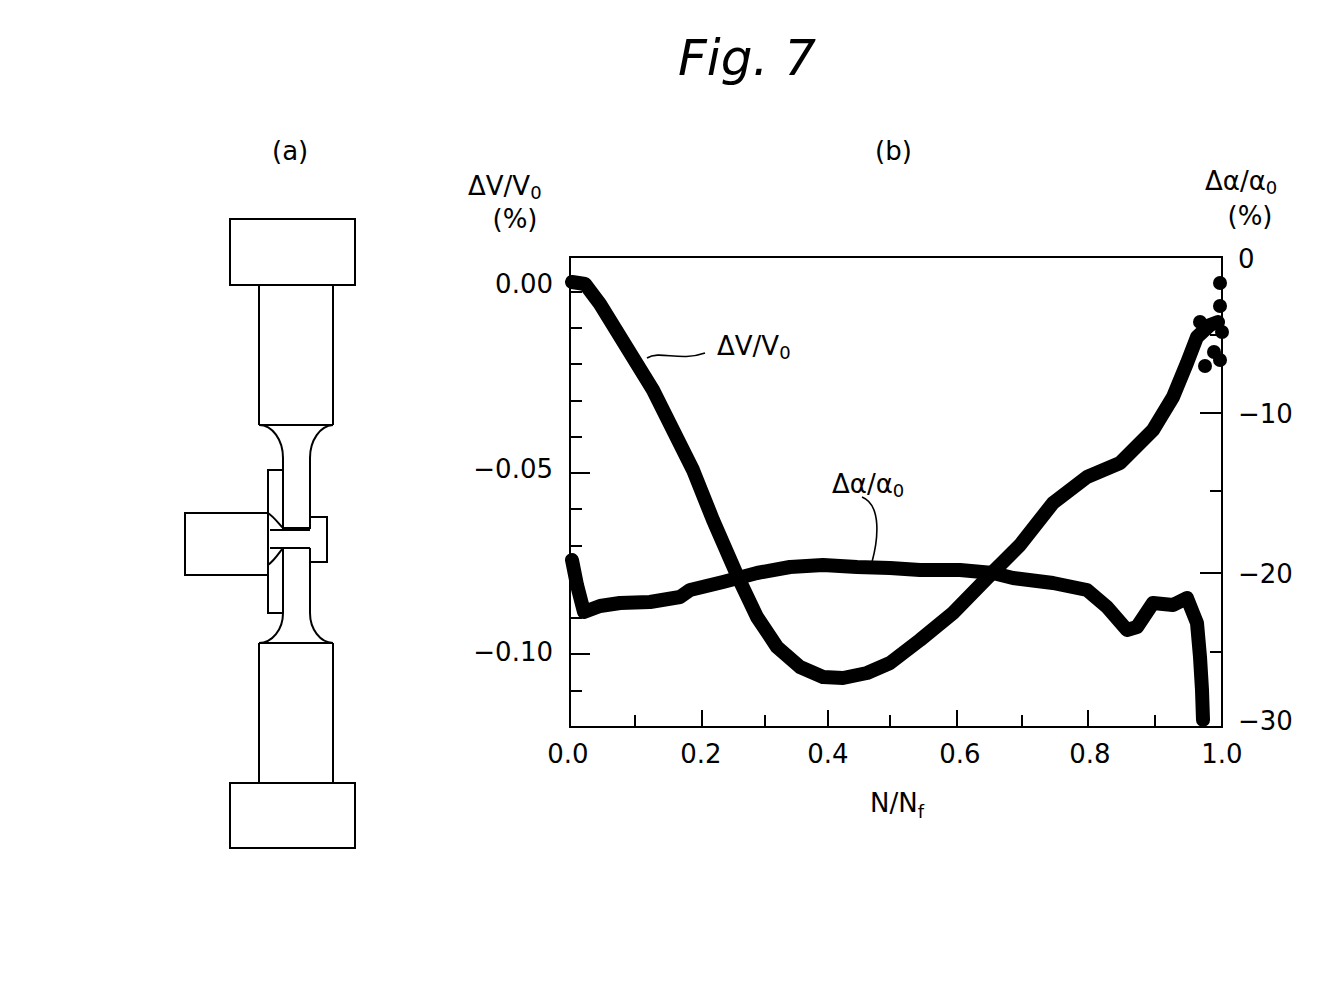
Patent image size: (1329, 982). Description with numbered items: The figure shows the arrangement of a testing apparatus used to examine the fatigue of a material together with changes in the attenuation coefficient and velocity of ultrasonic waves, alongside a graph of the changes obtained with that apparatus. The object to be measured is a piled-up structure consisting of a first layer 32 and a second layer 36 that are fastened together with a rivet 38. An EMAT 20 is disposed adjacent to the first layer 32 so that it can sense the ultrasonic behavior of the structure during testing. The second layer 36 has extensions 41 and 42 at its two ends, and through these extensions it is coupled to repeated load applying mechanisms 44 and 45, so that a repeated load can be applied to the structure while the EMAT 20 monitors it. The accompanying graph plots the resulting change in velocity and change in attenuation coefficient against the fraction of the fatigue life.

The EMAT 20 is at (226, 563).
The first layer 32 is at (278, 485).
The second layer 36 is at (300, 472).
The rivet 38 is at (313, 539).
The extension 41 is at (310, 359).
The extension 42 is at (310, 731).
The repeated load applying mechanism 44 is at (337, 254).
The repeated load applying mechanism 45 is at (337, 822).